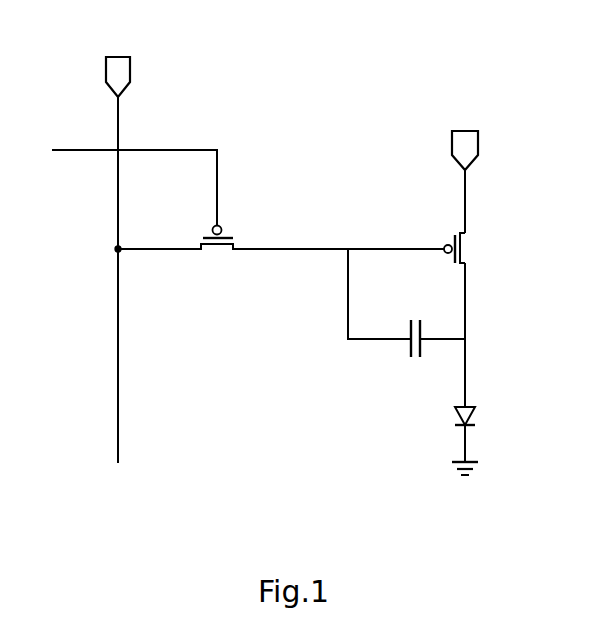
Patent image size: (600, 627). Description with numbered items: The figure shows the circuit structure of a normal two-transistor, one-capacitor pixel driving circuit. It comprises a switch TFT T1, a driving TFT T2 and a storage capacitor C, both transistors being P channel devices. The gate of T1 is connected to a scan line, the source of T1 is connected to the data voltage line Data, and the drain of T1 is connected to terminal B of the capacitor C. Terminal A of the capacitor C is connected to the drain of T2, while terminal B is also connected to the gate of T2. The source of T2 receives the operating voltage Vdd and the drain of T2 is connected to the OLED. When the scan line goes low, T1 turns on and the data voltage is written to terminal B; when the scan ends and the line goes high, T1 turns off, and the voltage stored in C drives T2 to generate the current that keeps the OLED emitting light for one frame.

The data voltage line Data is at (127, 242).
The switch TFT T1 is at (233, 265).
The driving TFT T2 is at (490, 320).
The operating voltage Vdd is at (464, 169).
The storage capacitor C is at (406, 318).
The terminal A of the capacitor A is at (442, 328).
The terminal B of the capacitor B is at (387, 328).
The element OLED is at (489, 441).